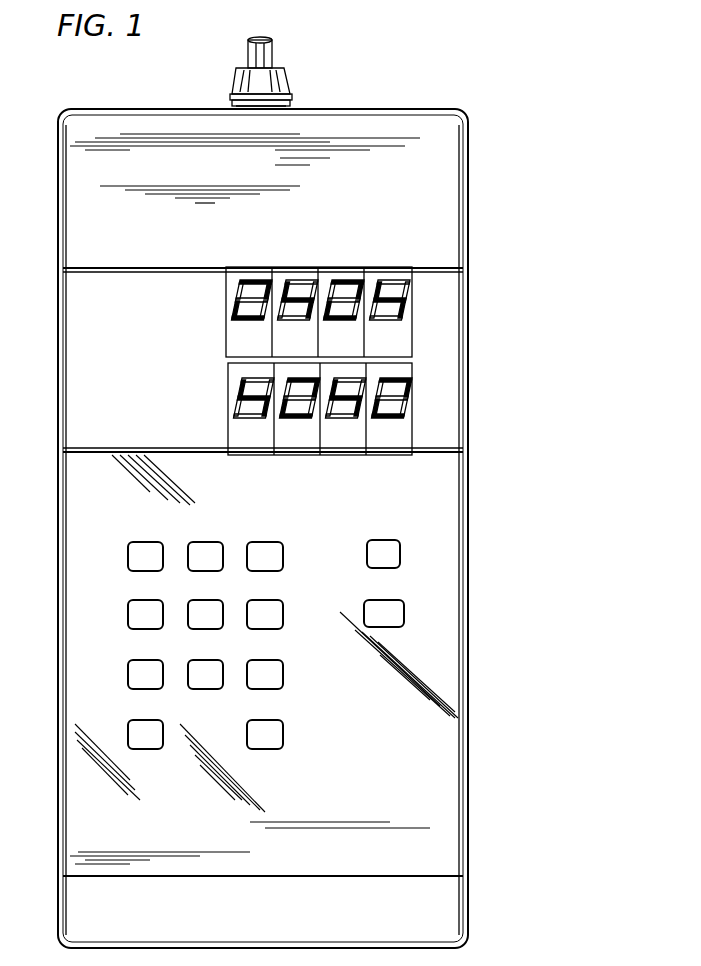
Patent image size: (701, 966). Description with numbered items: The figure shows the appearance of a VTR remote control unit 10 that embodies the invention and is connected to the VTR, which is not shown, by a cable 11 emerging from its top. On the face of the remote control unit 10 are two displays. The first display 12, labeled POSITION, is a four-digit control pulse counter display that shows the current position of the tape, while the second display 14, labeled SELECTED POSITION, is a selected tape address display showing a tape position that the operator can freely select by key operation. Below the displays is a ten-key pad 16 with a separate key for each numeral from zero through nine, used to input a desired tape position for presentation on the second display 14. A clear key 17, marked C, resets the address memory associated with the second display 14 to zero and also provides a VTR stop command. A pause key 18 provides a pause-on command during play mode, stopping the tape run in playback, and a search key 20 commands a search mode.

The remote control unit 10 is at (472, 142).
The cable 11 is at (275, 54).
The first display 12 is at (418, 300).
The second display 14 is at (420, 395).
The ten-key pad 16 is at (285, 538).
The clear key 17 is at (286, 738).
The pause key 18 is at (406, 550).
The search key 20 is at (408, 614).